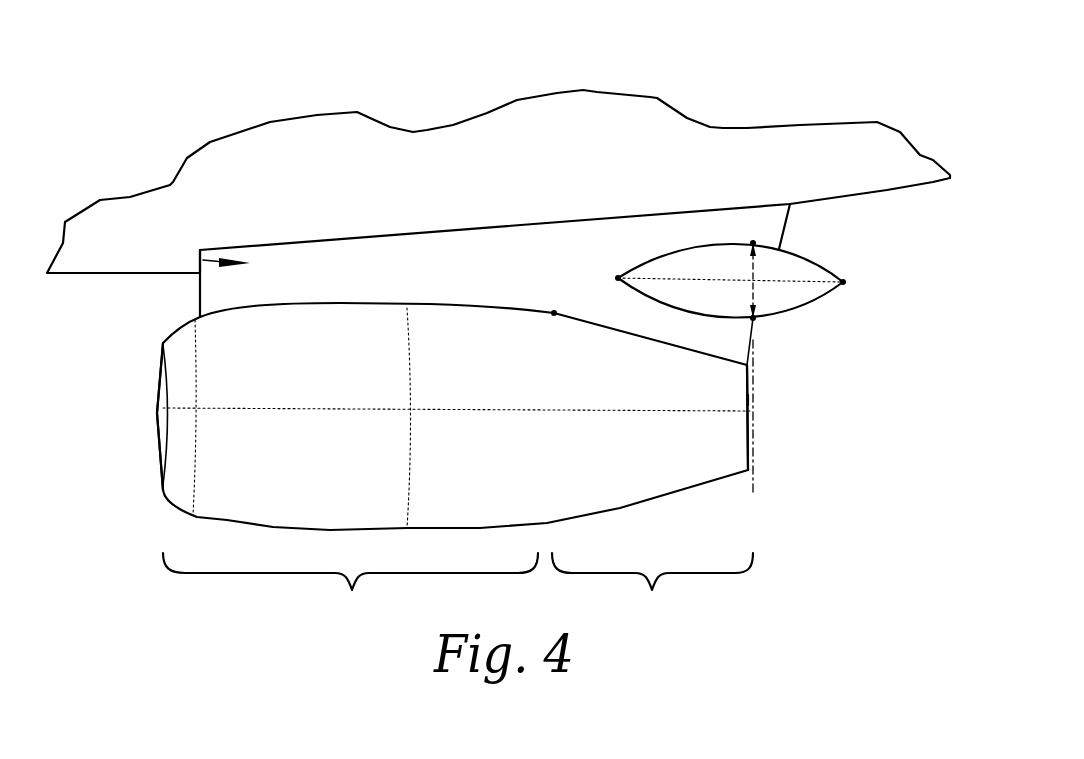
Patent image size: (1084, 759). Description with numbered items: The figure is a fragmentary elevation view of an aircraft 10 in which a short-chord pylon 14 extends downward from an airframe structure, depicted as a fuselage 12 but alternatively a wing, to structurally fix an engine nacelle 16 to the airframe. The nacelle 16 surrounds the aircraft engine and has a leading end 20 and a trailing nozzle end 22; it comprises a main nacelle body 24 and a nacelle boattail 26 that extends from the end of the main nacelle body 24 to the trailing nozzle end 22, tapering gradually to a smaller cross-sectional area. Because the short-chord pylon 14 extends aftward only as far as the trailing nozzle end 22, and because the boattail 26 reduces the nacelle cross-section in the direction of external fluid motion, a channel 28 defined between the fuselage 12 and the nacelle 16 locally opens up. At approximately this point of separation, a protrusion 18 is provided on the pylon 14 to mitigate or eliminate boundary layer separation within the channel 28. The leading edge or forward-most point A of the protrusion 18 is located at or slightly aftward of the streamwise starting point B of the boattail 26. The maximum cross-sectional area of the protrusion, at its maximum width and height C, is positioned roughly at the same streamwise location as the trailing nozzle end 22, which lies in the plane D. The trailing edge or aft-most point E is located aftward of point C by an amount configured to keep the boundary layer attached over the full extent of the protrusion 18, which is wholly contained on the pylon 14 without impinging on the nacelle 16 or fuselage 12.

The aircraft 10 is at (128, 84).
The fuselage 12 is at (403, 153).
The pylon 14 is at (233, 286).
The engine nacelle 16 is at (235, 486).
The protrusion 18 is at (803, 263).
The leading end 20 is at (155, 408).
The trailing nozzle end 22 is at (752, 462).
The main nacelle body 24 is at (350, 591).
The nacelle boattail 26 is at (652, 590).
The channel 28 is at (203, 260).
The leading edge of the protrusion A is at (618, 278).
The starting point of the nacelle boattail B is at (554, 313).
The maximum cross-sectional area of the protrusion C is at (753, 243).
The plane of the trailing nozzle end D is at (757, 400).
The trailing edge of the protrusion E is at (843, 282).